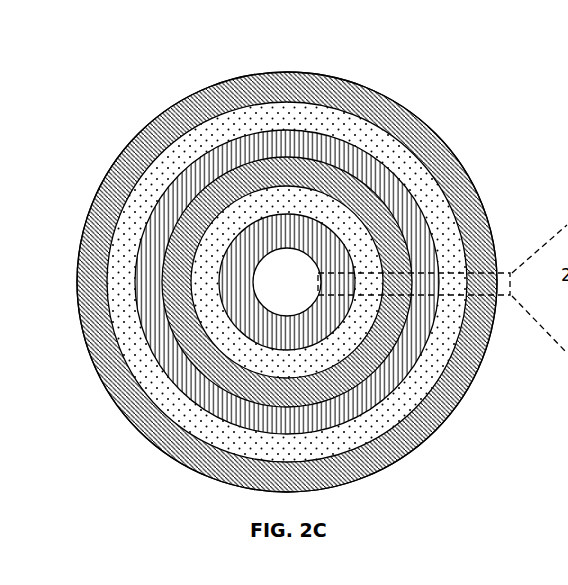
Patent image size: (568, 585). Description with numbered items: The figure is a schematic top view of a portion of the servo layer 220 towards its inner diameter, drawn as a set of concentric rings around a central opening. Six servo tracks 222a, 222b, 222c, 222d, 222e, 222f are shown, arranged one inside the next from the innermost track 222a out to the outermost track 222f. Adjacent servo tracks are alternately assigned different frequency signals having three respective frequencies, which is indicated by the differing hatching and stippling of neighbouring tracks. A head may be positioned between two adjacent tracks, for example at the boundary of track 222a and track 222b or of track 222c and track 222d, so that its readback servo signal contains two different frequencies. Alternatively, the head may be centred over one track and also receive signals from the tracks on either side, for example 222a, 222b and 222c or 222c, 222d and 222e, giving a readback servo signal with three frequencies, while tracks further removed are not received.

The servo layer 220 is at (192, 67).
The servo track 222a is at (322, 330).
The servo track 222b is at (363, 312).
The servo track 222c is at (385, 222).
The servo track 222d is at (373, 167).
The servo track 222e is at (343, 120).
The servo track 222f is at (313, 103).